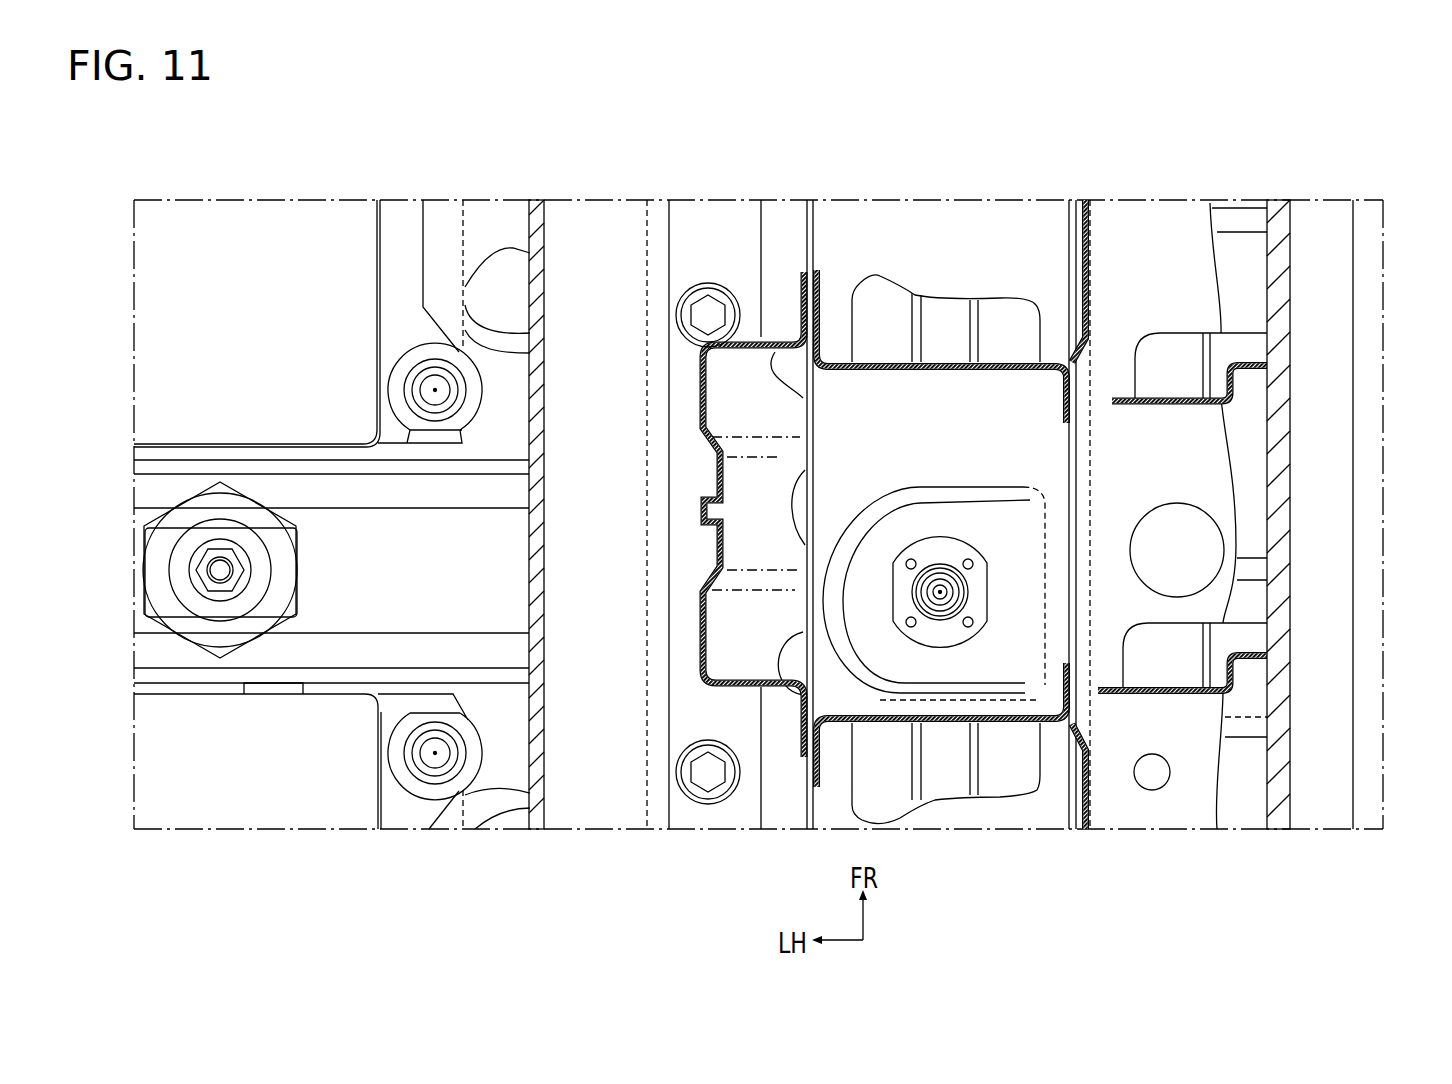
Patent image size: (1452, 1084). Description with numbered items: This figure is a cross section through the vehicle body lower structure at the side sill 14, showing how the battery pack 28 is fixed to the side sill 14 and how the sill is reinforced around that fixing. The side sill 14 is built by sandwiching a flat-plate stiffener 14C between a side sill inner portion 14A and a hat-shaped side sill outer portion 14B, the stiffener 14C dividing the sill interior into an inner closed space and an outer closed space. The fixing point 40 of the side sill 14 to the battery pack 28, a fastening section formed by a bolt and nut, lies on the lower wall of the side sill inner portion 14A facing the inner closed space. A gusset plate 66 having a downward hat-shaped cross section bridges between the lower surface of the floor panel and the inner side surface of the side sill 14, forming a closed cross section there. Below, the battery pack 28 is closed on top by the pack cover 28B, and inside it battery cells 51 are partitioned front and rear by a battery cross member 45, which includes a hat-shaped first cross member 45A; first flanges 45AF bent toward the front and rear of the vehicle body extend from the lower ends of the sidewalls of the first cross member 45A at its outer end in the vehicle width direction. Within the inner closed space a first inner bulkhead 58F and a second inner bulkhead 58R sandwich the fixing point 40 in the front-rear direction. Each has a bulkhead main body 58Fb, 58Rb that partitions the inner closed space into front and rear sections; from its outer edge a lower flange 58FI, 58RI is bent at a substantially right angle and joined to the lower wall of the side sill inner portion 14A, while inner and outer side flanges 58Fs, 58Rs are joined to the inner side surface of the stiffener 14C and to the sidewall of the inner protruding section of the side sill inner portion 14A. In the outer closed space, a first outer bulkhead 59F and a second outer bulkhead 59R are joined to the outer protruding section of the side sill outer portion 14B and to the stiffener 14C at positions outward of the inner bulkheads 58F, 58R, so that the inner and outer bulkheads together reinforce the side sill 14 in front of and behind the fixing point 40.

The side sill 14 is at (1276, 195).
The side sill inner portion 14A is at (804, 800).
The side sill outer portion 14B is at (1255, 512).
The stiffener 14C is at (1073, 805).
The battery pack 28 is at (349, 842).
The pack cover 28B is at (533, 230).
The fixing point 40 is at (940, 592).
The battery cross member 45 is at (168, 466).
The first cross member 45A is at (342, 573).
The first flange 45AF is at (487, 262).
The battery cell 51 is at (212, 210).
The first inner bulkhead 58F is at (988, 286).
The bulkhead main body 58Fb is at (930, 372).
The side flange 58Fs is at (817, 290).
The lower flange 58FI is at (903, 307).
The second inner bulkhead 58R is at (974, 773).
The bulkhead main body 58Rb is at (980, 711).
The side flange 58Rs is at (822, 770).
The lower flange 58RI is at (900, 800).
The first outer bulkhead 59F is at (1237, 405).
The second outer bulkhead 59R is at (1210, 700).
The gusset plate 66 is at (748, 320).